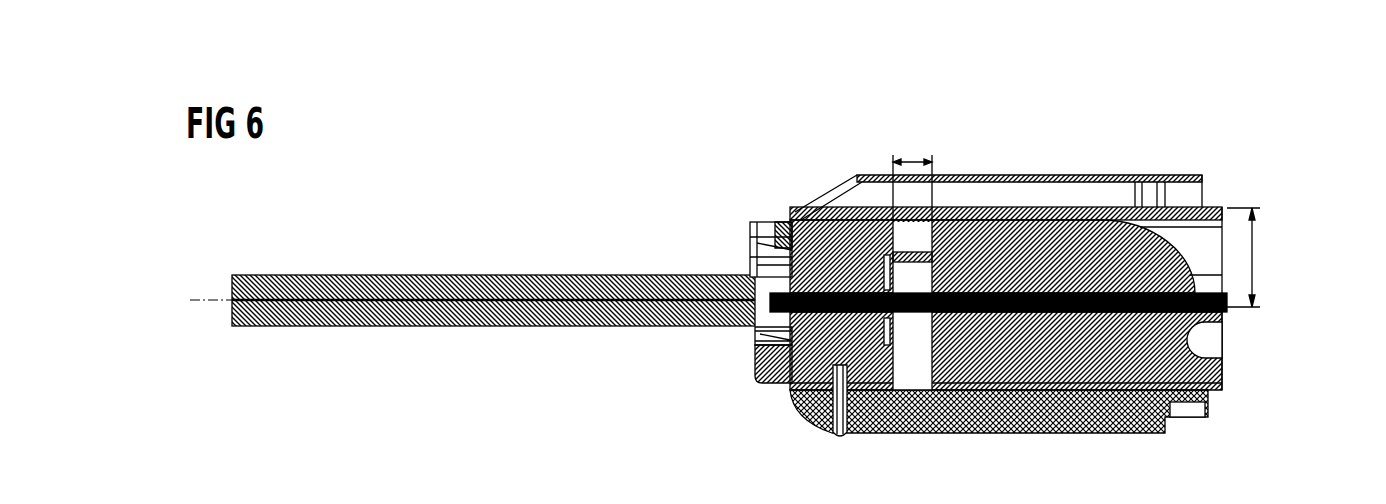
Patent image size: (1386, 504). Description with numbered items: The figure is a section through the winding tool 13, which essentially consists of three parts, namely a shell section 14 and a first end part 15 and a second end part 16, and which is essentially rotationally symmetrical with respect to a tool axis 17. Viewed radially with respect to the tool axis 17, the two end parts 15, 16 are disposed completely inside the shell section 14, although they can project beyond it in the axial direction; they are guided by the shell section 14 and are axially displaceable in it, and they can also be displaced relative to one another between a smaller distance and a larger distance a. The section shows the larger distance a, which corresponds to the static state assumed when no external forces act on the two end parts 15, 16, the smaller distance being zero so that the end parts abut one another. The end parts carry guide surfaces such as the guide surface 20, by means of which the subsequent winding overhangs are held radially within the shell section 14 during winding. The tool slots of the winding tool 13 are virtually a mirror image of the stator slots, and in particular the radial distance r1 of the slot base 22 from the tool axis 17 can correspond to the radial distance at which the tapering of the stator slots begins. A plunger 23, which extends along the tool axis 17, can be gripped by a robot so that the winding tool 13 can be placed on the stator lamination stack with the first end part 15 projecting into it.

The winding tool 13 is at (1034, 245).
The shell section 14 is at (985, 420).
The first end part 15 is at (1227, 378).
The second end part 16 is at (753, 360).
The tool axis 17 is at (200, 298).
The guide surface 20 is at (750, 268).
The slot base 22 is at (1019, 205).
The plunger 23 is at (479, 274).
The larger distance a is at (910, 160).
The radial distance r1 is at (1258, 258).